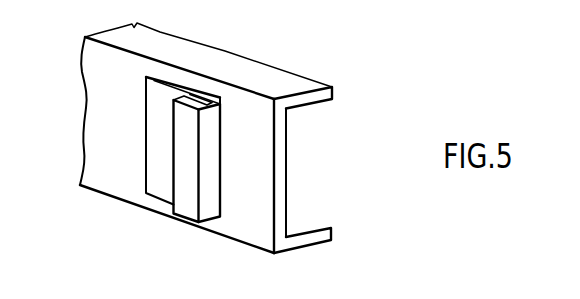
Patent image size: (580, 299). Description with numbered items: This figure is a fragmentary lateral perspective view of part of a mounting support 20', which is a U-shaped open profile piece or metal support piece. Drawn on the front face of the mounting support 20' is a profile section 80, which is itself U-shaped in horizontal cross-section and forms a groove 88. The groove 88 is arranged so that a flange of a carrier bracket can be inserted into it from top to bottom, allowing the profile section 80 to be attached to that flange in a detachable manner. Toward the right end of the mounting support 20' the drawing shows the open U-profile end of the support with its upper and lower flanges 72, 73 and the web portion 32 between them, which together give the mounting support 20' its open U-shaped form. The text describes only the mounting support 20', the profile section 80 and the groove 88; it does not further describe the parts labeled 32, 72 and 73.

The mounting support 20' is at (182, 138).
The channel member 32 is at (278, 163).
The upper flange 72 is at (332, 95).
The lower flange 73 is at (318, 227).
The profile section 80 is at (217, 210).
The groove 88 is at (193, 100).